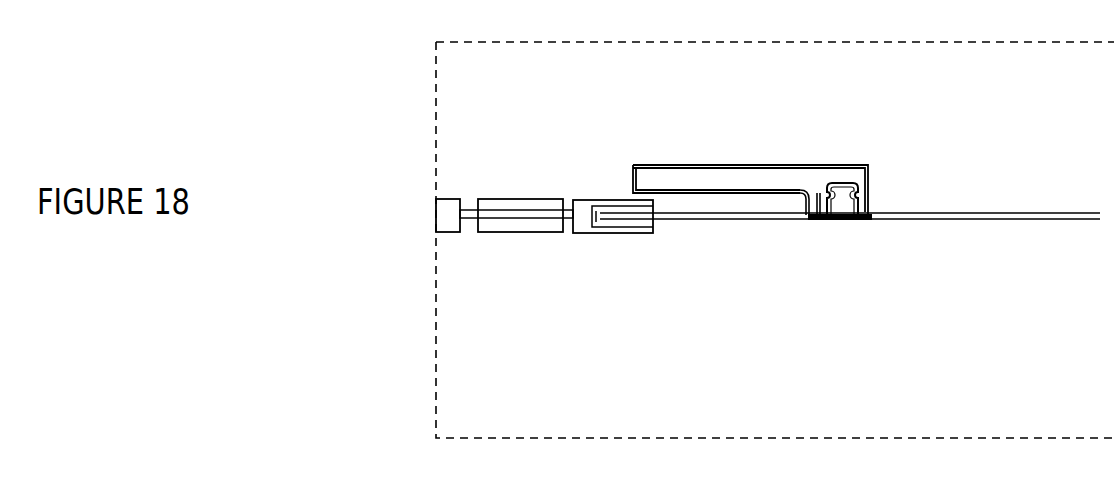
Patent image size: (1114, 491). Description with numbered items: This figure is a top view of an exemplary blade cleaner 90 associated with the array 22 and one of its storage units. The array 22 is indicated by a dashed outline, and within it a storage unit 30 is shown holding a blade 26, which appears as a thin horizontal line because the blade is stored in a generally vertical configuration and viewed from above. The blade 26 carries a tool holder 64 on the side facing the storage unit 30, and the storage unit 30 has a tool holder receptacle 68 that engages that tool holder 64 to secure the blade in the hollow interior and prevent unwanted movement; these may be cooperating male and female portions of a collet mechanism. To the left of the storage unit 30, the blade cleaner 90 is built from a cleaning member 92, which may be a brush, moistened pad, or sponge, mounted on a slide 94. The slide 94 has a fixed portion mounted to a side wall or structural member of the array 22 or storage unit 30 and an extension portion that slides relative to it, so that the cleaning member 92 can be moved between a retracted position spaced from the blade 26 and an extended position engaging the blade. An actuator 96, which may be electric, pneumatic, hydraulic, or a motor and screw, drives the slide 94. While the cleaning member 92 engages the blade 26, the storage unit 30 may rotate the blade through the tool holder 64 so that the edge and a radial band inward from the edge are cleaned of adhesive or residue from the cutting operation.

The array 22 is at (495, 42).
The blade 26 is at (1038, 214).
The storage unit 30 is at (702, 165).
The tool holder 64 is at (860, 206).
The tool holder receptacle 68 is at (818, 193).
The blade cleaner 90 is at (448, 232).
The cleaning member 92 is at (612, 225).
The slide 94 is at (525, 232).
The actuator 96 is at (462, 199).